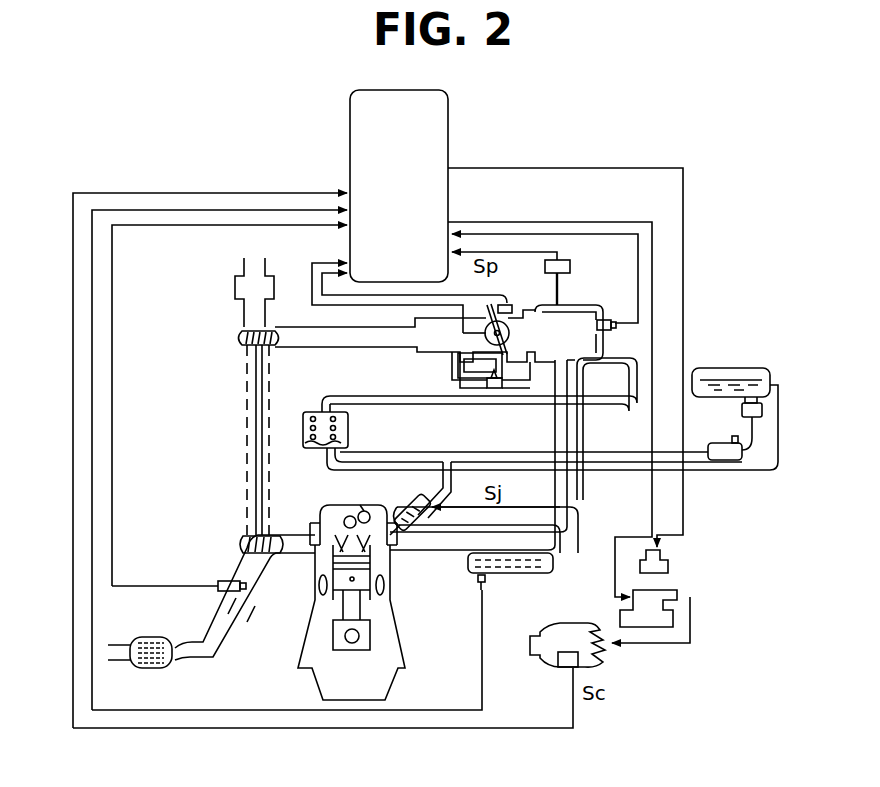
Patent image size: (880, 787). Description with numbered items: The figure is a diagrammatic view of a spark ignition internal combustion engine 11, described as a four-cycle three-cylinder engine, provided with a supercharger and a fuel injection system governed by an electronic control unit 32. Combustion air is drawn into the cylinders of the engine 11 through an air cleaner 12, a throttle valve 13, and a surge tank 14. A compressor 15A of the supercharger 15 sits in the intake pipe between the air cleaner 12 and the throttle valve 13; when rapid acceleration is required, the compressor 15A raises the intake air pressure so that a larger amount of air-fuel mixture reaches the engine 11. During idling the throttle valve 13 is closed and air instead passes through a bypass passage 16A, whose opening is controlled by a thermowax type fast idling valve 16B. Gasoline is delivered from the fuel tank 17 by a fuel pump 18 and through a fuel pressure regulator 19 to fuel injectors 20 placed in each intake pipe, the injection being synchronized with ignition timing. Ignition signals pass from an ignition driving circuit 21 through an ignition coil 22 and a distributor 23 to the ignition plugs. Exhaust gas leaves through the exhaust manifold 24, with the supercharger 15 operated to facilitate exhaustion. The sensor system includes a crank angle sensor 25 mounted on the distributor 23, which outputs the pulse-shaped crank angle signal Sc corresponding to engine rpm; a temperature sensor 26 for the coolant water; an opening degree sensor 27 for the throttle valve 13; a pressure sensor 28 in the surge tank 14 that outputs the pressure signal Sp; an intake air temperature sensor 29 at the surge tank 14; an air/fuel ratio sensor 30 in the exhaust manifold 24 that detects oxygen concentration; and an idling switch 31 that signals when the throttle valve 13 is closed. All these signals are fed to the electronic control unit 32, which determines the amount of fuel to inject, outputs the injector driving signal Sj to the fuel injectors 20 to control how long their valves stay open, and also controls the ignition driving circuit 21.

The engine 11 is at (398, 630).
The air cleaner 12 is at (235, 291).
The throttle valve 13 is at (508, 352).
The surge tank 14 is at (565, 305).
The supercharger 15 is at (246, 410).
The compressor 15A is at (242, 339).
The bypass passage 16A is at (452, 380).
The fast idling valve 16B is at (496, 390).
The fuel tank 17 is at (735, 368).
The fuel pump 18 is at (720, 445).
The fuel pressure regulator 19 is at (350, 430).
The fuel injectors 20 is at (403, 502).
The ignition driving circuit 21 is at (668, 565).
The ignition coil 22 is at (677, 595).
The distributor 23 is at (565, 622).
The exhaust manifold 24 is at (258, 600).
The crank angle sensor 25 is at (560, 670).
The temperature sensor 26 is at (485, 585).
The opening degree sensor 27 is at (443, 351).
The pressure sensor 28 is at (570, 268).
The intake air temperature sensor 29 is at (618, 327).
The air/fuel ratio sensor 30 is at (226, 580).
The idling switch 31 is at (512, 300).
The electronic control unit 32 is at (450, 125).